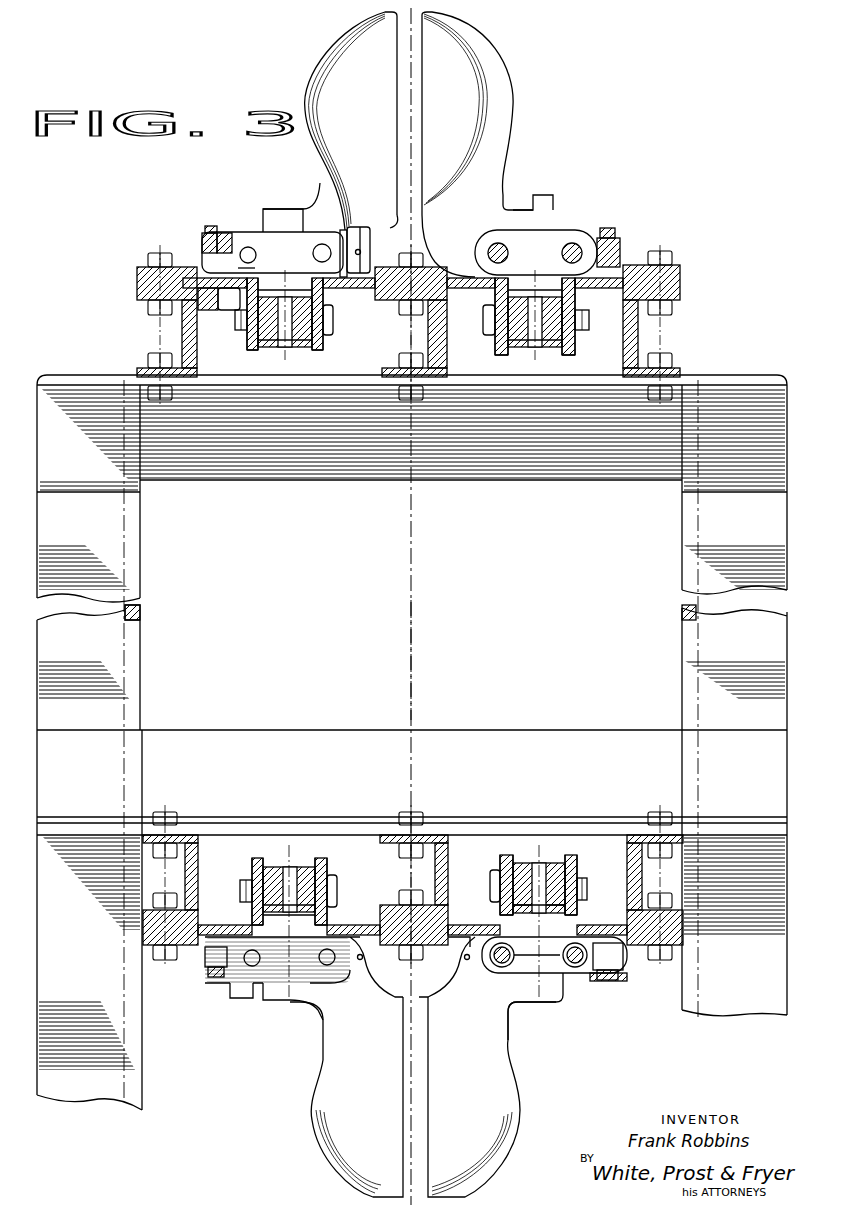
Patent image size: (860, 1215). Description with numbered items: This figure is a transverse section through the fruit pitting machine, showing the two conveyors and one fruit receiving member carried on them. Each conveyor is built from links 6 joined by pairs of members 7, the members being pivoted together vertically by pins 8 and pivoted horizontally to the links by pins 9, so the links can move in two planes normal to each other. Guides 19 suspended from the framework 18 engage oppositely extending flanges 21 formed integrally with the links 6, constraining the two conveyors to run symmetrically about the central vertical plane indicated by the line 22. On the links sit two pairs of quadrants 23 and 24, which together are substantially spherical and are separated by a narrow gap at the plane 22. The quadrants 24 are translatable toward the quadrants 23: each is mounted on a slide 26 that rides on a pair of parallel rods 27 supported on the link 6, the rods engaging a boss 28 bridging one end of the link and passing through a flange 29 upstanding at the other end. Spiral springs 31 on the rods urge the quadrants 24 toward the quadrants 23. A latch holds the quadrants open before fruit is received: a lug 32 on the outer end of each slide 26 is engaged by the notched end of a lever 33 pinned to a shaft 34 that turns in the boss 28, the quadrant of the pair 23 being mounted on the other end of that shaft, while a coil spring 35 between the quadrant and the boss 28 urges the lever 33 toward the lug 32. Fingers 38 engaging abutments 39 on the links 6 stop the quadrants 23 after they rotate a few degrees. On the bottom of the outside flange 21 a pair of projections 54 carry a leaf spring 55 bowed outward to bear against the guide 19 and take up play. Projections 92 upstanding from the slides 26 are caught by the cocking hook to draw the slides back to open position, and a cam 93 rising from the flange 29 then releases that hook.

The link 6 is at (247, 349).
The member 7 is at (258, 336).
The pin 8 is at (280, 345).
The pin 9 is at (237, 320).
The framework 18 is at (141, 660).
The guide 19 is at (137, 284).
The flange 21 is at (190, 272).
The central vertical plane 22 is at (411, 660).
The quadrant pair 23 is at (330, 158).
The quadrant pair 24 is at (322, 185).
The slide 26 is at (557, 240).
The rod 27 is at (315, 255).
The boss 28 is at (595, 982).
The flange 29 is at (475, 277).
The spiral spring 31 is at (580, 960).
The lug 32 is at (205, 243).
The lever 33 is at (220, 230).
The shaft 34 is at (372, 255).
The coil spring 35 is at (340, 240).
The finger 38 is at (215, 240).
The abutment 39 is at (250, 268).
The projection 54 is at (240, 290).
The leaf spring 55 is at (205, 305).
The projection 92 is at (285, 212).
The cam 93 is at (242, 995).